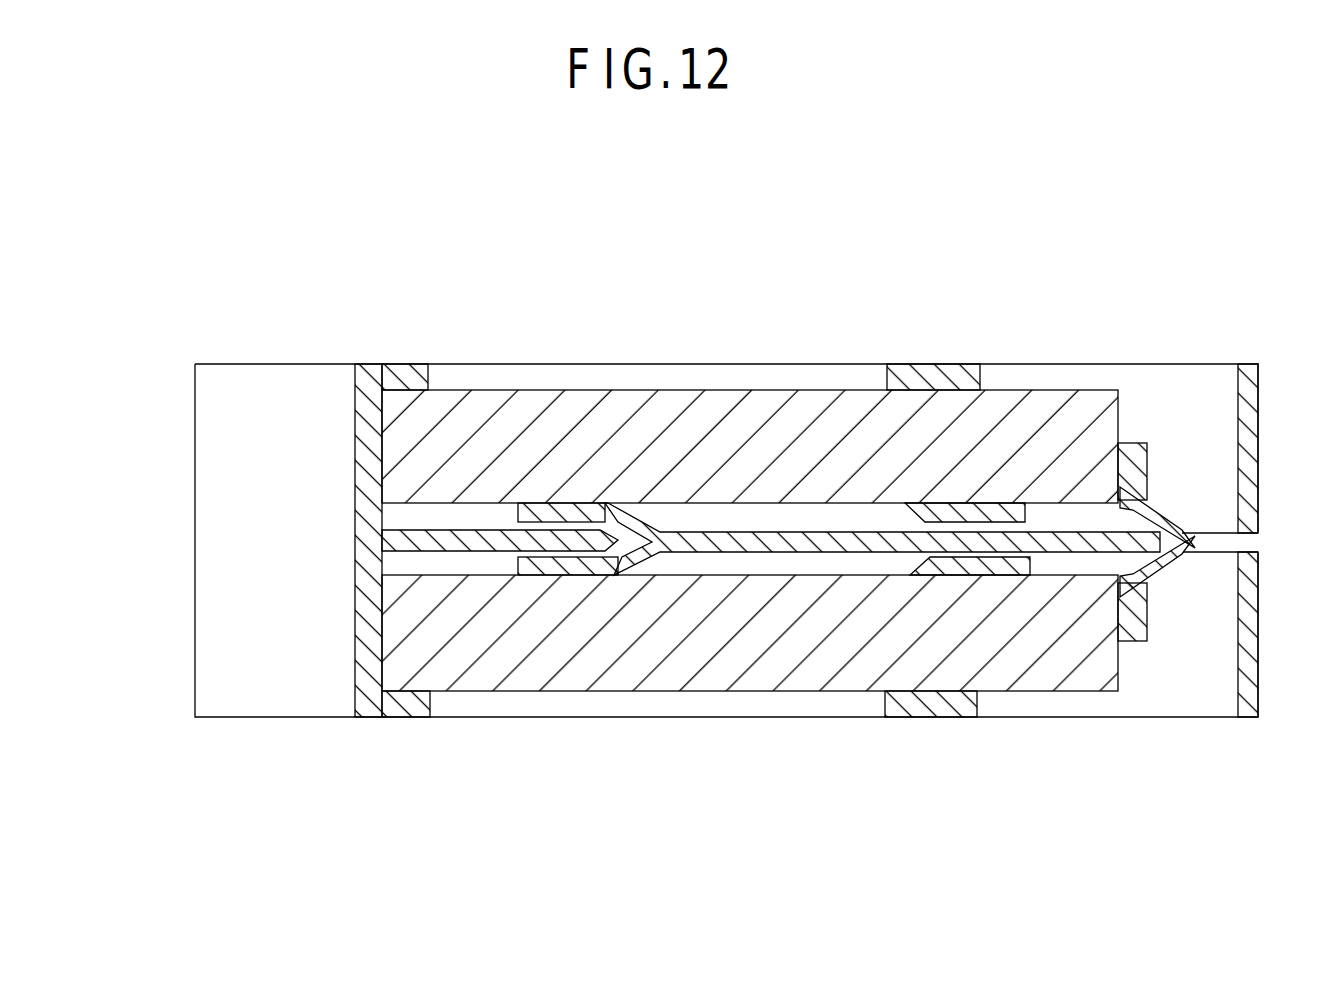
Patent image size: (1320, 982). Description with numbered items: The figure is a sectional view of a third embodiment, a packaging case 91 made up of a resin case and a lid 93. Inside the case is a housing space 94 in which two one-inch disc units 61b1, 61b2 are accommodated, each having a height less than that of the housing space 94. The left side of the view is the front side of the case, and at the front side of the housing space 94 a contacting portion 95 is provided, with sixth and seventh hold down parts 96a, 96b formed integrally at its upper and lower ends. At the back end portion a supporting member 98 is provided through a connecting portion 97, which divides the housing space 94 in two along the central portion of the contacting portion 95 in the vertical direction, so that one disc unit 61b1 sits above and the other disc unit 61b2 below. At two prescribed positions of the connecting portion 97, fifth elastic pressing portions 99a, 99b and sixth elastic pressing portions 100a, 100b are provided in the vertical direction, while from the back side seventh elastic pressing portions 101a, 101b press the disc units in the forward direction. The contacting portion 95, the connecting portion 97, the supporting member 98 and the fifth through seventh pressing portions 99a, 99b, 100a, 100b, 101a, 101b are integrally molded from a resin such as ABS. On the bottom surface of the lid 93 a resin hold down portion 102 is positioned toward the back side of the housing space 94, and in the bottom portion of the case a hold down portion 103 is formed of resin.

The packaging case 91 is at (622, 233).
The lid 93 is at (767, 360).
The housing space 94 is at (1173, 378).
The contacting portion 95 is at (362, 426).
The sixth hold down part 96a is at (404, 365).
The seventh hold down part 96b is at (410, 717).
The connecting portion 97 is at (408, 530).
The supporting member 98 is at (1255, 392).
The fifth elastic pressing portion 99a is at (518, 517).
The fifth elastic pressing portion 99b is at (518, 567).
The sixth elastic pressing portion 100a is at (1025, 522).
The sixth elastic pressing portion 100b is at (1030, 558).
The seventh elastic pressing portion 101a is at (1130, 455).
The seventh elastic pressing portion 101b is at (1130, 628).
The hold down portion 102 is at (942, 366).
The hold down portion 103 is at (940, 710).
The disc unit 61b1 is at (543, 397).
The disc unit 61b2 is at (570, 676).